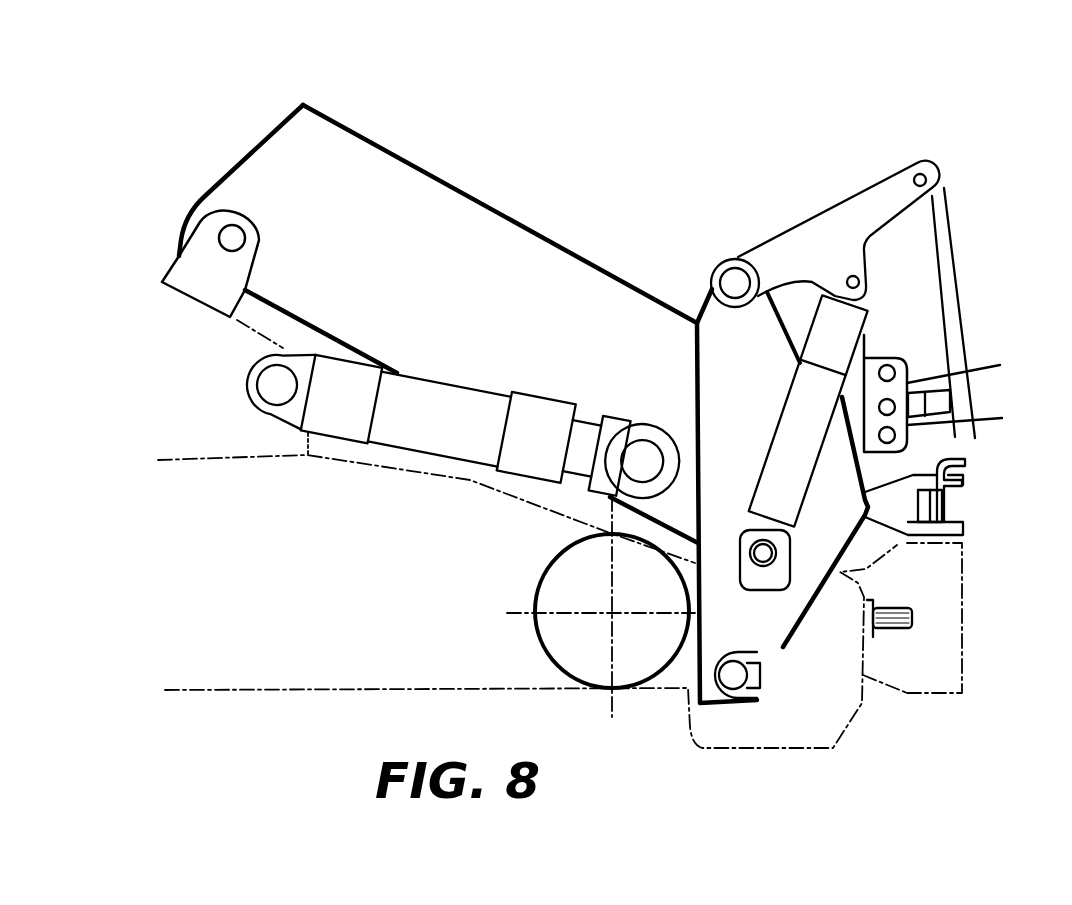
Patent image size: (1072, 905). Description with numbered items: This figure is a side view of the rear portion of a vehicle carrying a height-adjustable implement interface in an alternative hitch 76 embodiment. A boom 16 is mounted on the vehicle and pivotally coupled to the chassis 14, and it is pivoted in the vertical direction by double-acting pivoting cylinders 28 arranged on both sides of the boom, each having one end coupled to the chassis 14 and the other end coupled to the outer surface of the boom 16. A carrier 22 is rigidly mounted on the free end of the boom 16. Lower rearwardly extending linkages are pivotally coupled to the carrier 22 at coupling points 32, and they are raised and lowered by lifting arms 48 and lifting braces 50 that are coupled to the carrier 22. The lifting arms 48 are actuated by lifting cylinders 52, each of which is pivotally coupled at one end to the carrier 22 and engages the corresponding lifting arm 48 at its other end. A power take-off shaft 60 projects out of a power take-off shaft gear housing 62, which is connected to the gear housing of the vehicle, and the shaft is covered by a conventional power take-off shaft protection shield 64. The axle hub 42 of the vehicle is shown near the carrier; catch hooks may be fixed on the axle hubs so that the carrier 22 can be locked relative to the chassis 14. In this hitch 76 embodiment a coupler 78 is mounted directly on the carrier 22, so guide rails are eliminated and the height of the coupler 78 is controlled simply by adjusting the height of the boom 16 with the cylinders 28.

The chassis 14 is at (225, 658).
The boom 16 is at (488, 204).
The carrier 22 is at (733, 358).
The pivoting cylinder 28 is at (425, 430).
The coupling point 32 is at (733, 677).
The axle hub 42 is at (562, 670).
The lifting arm 48 is at (792, 247).
The lifting brace 50 is at (933, 250).
The lifting cylinder 52 is at (815, 412).
The power take-off shaft 60 is at (897, 637).
The power take-off shaft gear housing 62 is at (823, 748).
The power take-off shaft protection shield 64 is at (945, 693).
The hitch 76 is at (987, 528).
The coupler 78 is at (957, 522).